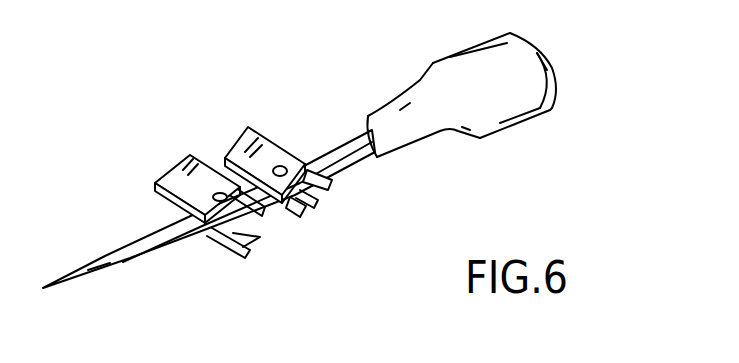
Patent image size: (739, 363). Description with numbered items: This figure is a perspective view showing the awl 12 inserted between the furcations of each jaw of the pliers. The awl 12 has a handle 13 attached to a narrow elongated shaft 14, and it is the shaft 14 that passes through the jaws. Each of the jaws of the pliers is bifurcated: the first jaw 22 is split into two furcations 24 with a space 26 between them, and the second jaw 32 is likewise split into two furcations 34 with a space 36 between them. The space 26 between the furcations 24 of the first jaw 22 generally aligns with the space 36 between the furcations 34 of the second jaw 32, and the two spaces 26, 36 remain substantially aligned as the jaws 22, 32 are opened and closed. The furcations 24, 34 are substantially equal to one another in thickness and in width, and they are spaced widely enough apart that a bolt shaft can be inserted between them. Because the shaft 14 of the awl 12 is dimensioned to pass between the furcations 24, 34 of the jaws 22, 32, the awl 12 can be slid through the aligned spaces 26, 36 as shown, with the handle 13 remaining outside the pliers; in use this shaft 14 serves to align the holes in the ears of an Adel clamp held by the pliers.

The awl 12 is at (367, 116).
The handle 13 is at (508, 98).
The shaft 14 is at (330, 150).
The first jaw 22 is at (176, 168).
The furcations 24 is at (240, 241).
The space 26 is at (272, 232).
The second jaw 32 is at (249, 127).
The furcations 34 is at (336, 180).
The space 36 is at (325, 211).